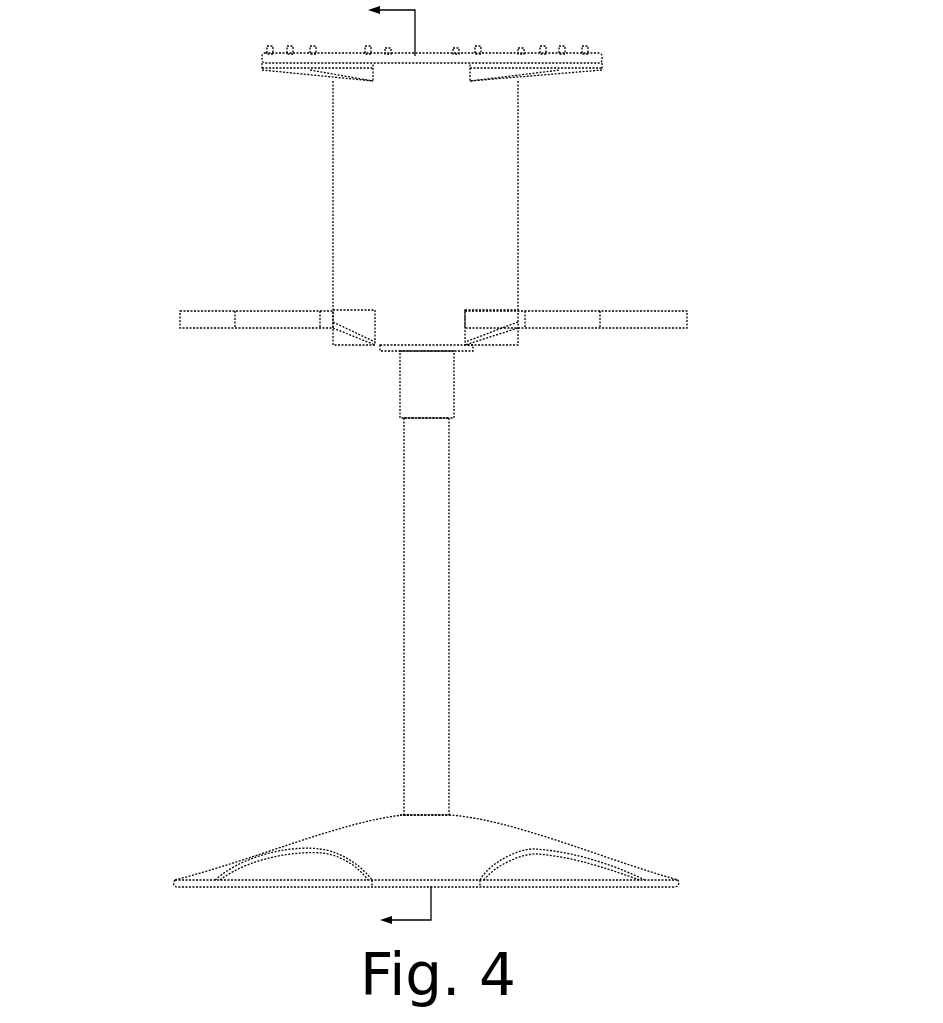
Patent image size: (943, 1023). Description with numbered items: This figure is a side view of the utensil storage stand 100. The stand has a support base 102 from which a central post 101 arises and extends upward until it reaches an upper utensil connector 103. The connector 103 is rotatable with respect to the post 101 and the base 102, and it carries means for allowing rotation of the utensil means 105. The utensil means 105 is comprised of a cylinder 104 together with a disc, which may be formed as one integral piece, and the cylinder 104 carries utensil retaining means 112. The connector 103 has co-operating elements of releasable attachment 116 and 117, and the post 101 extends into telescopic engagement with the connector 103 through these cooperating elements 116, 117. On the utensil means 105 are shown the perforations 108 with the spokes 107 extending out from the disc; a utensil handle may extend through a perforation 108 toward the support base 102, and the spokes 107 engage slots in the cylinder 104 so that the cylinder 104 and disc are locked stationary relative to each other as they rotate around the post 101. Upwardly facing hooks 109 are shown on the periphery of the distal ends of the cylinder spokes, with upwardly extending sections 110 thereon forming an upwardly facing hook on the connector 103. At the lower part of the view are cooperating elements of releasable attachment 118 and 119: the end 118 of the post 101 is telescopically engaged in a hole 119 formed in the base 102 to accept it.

The utensil storage stand 100 is at (386, 466).
The central post 101 is at (452, 617).
The support base 102 is at (426, 808).
The connector 103 is at (425, 419).
The cylinder 104 is at (500, 168).
The utensil means 105 is at (406, 337).
The spokes 107 is at (488, 366).
The perforations 108 is at (220, 328).
The upwardly facing hooks 109 is at (596, 65).
The upwardly extending sections 110 is at (578, 47).
The utensil retaining means 112 is at (260, 62).
The co-operating element of releasable attachment 116 is at (398, 392).
The co-operating element of releasable attachment 117 is at (428, 420).
The end of the post 118 is at (445, 802).
The hole 119 is at (408, 805).